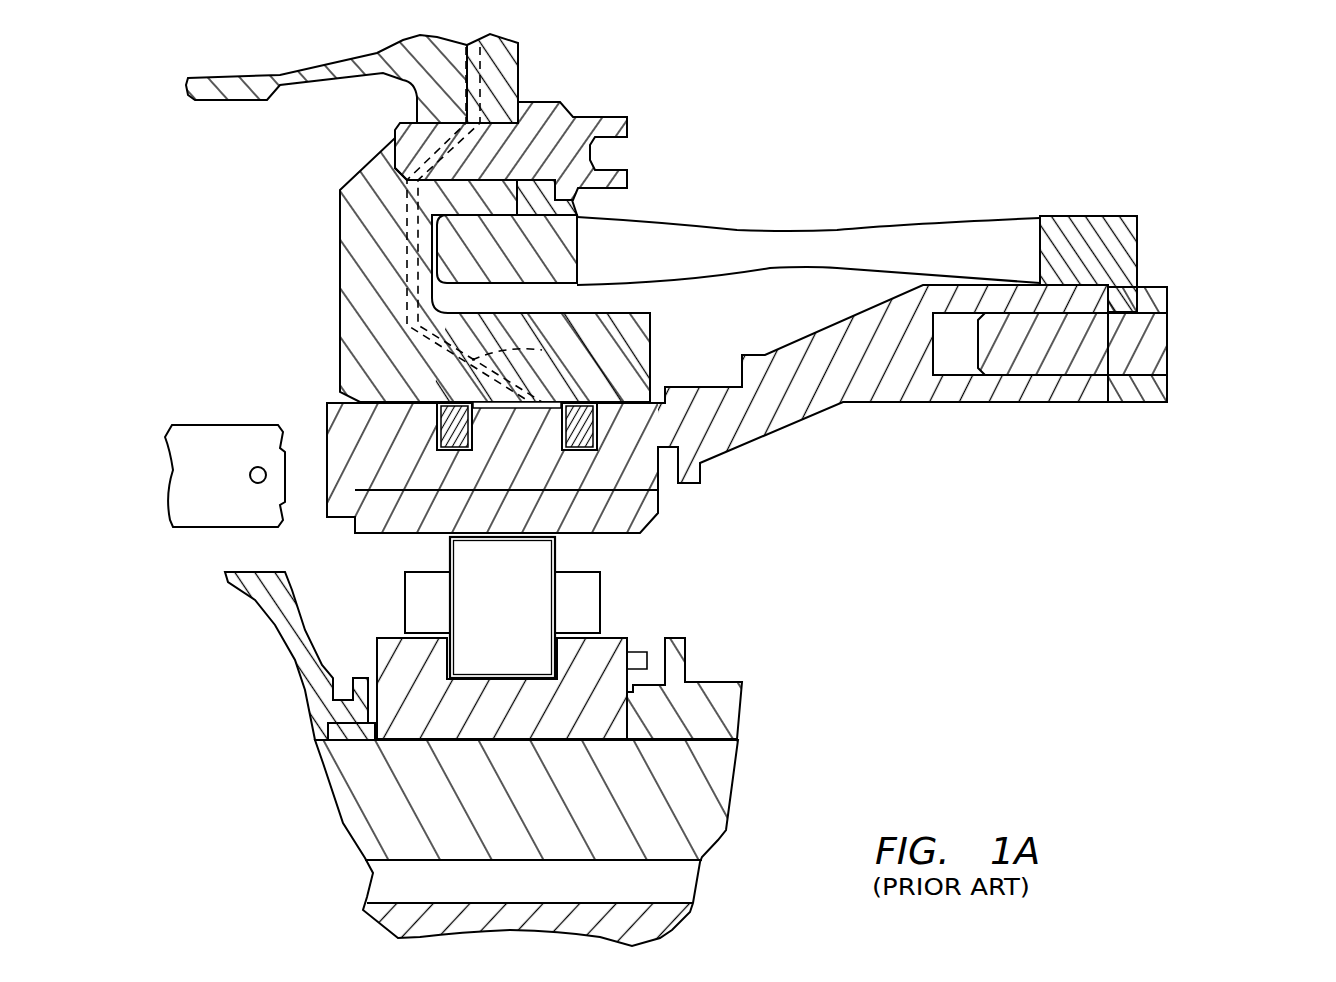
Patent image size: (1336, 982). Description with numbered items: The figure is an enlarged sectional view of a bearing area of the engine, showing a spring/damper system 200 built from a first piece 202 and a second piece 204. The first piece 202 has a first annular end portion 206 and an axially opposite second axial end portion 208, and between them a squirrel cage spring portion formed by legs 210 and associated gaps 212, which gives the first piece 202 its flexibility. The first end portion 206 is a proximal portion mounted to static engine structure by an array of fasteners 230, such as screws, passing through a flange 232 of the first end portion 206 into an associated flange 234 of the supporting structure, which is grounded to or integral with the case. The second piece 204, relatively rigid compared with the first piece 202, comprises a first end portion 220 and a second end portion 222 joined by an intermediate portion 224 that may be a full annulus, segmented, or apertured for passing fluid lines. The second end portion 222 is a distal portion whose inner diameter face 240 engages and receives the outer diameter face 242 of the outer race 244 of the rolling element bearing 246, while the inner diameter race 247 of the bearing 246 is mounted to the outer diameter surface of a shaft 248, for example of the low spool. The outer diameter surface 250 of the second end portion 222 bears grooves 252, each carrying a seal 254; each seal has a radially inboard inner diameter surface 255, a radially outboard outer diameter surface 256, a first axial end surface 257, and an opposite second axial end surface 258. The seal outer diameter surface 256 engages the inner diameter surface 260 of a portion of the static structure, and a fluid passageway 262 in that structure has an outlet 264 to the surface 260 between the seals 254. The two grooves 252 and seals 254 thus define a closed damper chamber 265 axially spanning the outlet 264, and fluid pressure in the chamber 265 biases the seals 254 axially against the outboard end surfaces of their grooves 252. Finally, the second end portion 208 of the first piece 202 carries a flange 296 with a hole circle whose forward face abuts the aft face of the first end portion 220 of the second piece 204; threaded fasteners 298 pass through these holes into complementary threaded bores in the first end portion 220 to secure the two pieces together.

The spring/damper system 200 is at (1078, 120).
The first piece 202 is at (830, 186).
The second piece 204 is at (906, 425).
The first annular end portion 206 is at (520, 240).
The second axial end portion 208 is at (1093, 240).
The legs 210 is at (985, 230).
The gaps 212 is at (880, 250).
The first end portion 220 is at (1085, 298).
The second end portion 222 is at (580, 520).
The intermediate portion 224 is at (800, 413).
The fasteners 230 is at (648, 103).
The flange 232 is at (542, 113).
The flange 234 is at (503, 70).
The inner diameter face 240 is at (600, 480).
The outer diameter face 242 is at (458, 480).
The outer race 244 is at (590, 540).
The rolling element bearing 246 is at (450, 620).
The inner diameter race 247 is at (603, 679).
The shaft 248 is at (668, 807).
The outer diameter surface 250 is at (640, 378).
The grooves 252 is at (600, 440).
The seal 254 is at (702, 470).
The inner diameter surface 255 is at (600, 468).
The outer diameter surface 256 is at (560, 425).
The first axial end surface 257 is at (360, 396).
The second axial end surface 258 is at (480, 438).
The inner diameter surface 260 is at (462, 403).
The fluid passageway 262 is at (541, 357).
The outlet 264 is at (535, 415).
The damper chamber 265 is at (545, 402).
The flange 296 is at (1125, 303).
The threaded fasteners 298 is at (1185, 358).